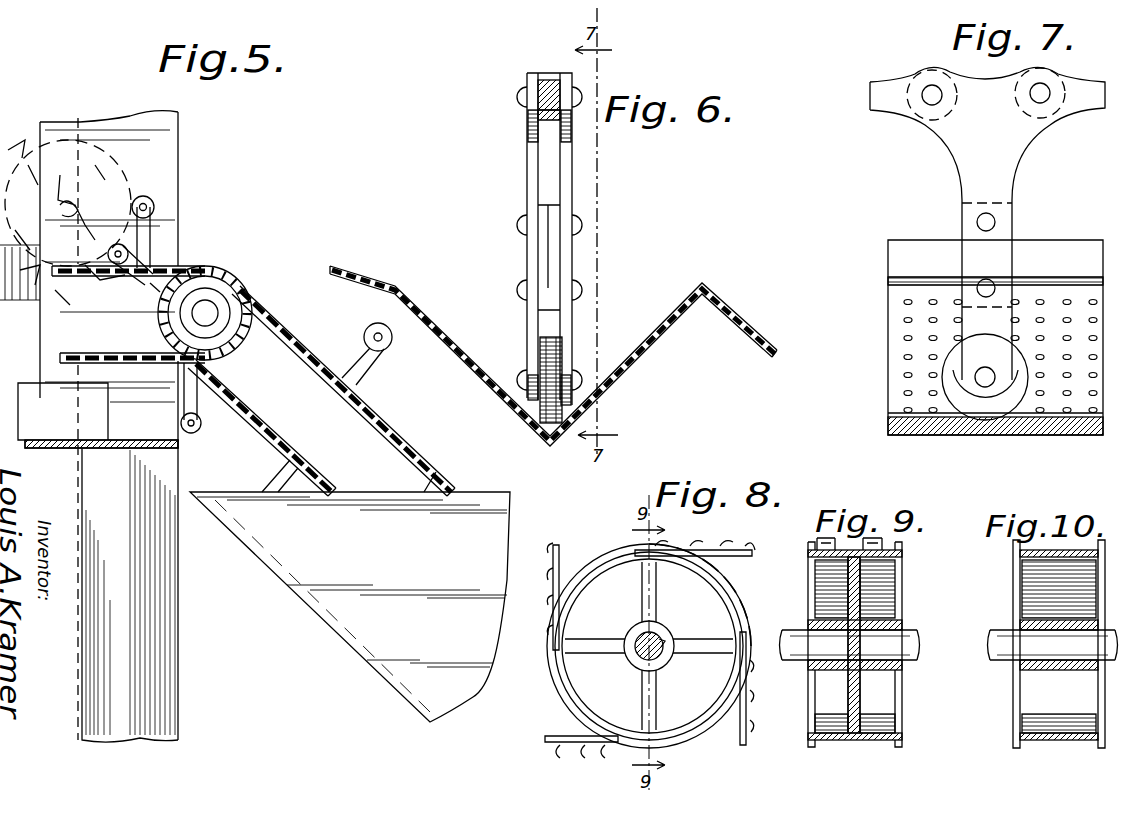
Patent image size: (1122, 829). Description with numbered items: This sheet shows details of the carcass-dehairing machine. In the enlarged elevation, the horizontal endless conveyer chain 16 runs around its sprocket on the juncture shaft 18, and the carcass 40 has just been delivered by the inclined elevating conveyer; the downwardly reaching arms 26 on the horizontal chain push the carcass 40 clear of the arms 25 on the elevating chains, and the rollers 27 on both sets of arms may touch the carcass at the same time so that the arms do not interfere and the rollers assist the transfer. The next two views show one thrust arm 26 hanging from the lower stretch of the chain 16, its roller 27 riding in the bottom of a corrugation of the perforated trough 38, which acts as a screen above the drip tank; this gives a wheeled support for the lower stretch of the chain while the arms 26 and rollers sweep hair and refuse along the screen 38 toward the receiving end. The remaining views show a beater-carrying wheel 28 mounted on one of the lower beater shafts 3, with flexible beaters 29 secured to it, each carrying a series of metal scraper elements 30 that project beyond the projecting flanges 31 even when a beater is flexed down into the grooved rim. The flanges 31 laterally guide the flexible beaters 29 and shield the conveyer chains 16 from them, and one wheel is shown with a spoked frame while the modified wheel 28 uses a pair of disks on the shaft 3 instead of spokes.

In FIG. 8, the lower beater shaft 3 is at (640, 655).
In FIG. 9, the lower beater shaft 3 is at (918, 652).
In FIG. 10, the lower beater shaft 3 is at (1020, 640).
In FIG. 5, the endless conveyer chain 16 is at (122, 357).
In FIG. 7, the endless conveyer chain 16 is at (1088, 100).
In FIG. 5, the juncture shaft 18 is at (206, 313).
In FIG. 5, the arm 25 is at (152, 285).
In FIG. 5, the arm 26 is at (152, 232).
In FIG. 6, the arm 26 is at (566, 184).
In FIG. 7, the arm 26 is at (990, 240).
In FIG. 5, the roller 27 is at (152, 206).
In FIG. 6, the roller 27 is at (545, 345).
In FIG. 7, the roller 27 is at (983, 410).
In FIG. 8, the wheel 28 is at (652, 605).
In FIG. 9, the wheel 28 is at (898, 592).
In FIG. 10, the wheel 28 is at (1060, 672).
In FIG. 8, the flexible beater 29 is at (730, 560).
In FIG. 9, the flexible beater 29 is at (880, 542).
In FIG. 10, the flexible beater 29 is at (1059, 645).
In FIG. 8, the scraper element 30 is at (718, 545).
In FIG. 9, the scraper element 30 is at (818, 540).
In FIG. 8, the flange 31 is at (612, 560).
In FIG. 9, the flange 31 is at (900, 550).
In FIG. 10, the flange 31 is at (1013, 745).
In FIG. 5, the trough 38 is at (63, 412).
In FIG. 6, the trough 38 is at (640, 360).
In FIG. 7, the trough 38 is at (895, 355).
In FIG. 5, the carcass 40 is at (130, 150).